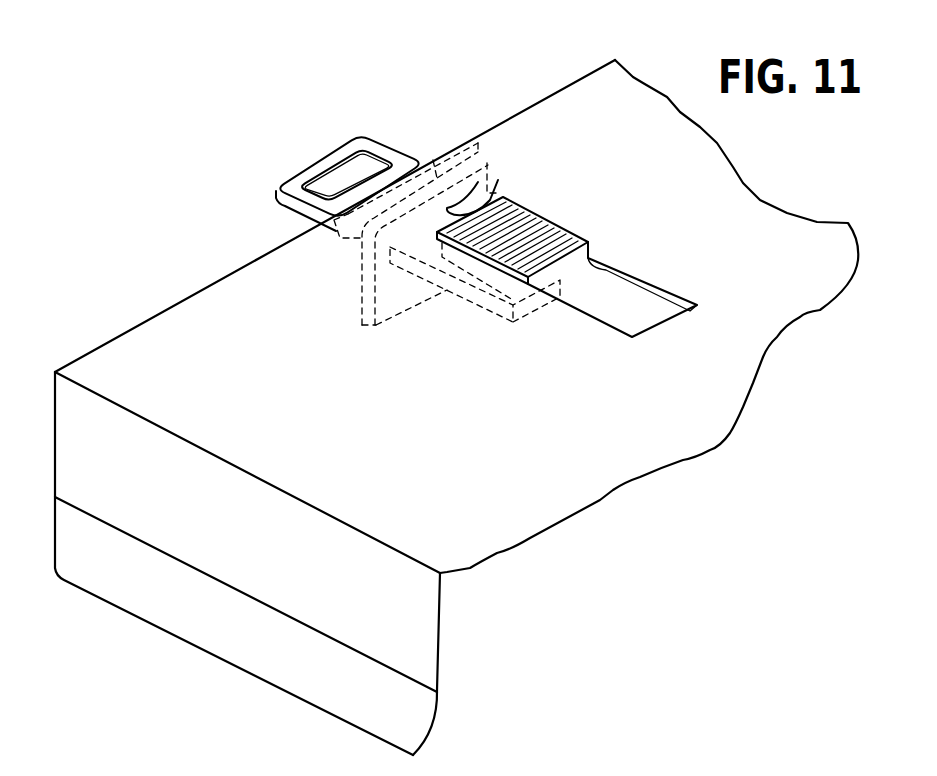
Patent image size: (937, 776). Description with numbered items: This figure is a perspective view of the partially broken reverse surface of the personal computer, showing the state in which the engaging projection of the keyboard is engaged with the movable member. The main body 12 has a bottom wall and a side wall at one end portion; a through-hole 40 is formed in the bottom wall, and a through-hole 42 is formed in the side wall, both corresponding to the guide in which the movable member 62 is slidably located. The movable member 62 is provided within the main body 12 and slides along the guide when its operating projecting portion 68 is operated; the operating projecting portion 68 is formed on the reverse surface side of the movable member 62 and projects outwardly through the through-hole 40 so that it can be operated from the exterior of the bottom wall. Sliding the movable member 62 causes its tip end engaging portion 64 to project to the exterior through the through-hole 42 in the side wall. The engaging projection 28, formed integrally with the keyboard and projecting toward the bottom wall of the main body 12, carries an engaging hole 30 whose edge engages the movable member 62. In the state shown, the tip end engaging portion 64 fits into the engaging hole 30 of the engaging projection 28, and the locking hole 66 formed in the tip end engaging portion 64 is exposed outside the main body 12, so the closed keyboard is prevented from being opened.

The main body 12 is at (178, 303).
The engaging projection 28 is at (360, 300).
The engaging hole 30 is at (478, 182).
The through-hole 40 is at (574, 303).
The through-hole 42 is at (433, 160).
The movable member 62 is at (476, 300).
The tip end engaging portion 64 is at (390, 143).
The locking hole 66 is at (310, 192).
The operating projecting portion 68 is at (548, 213).